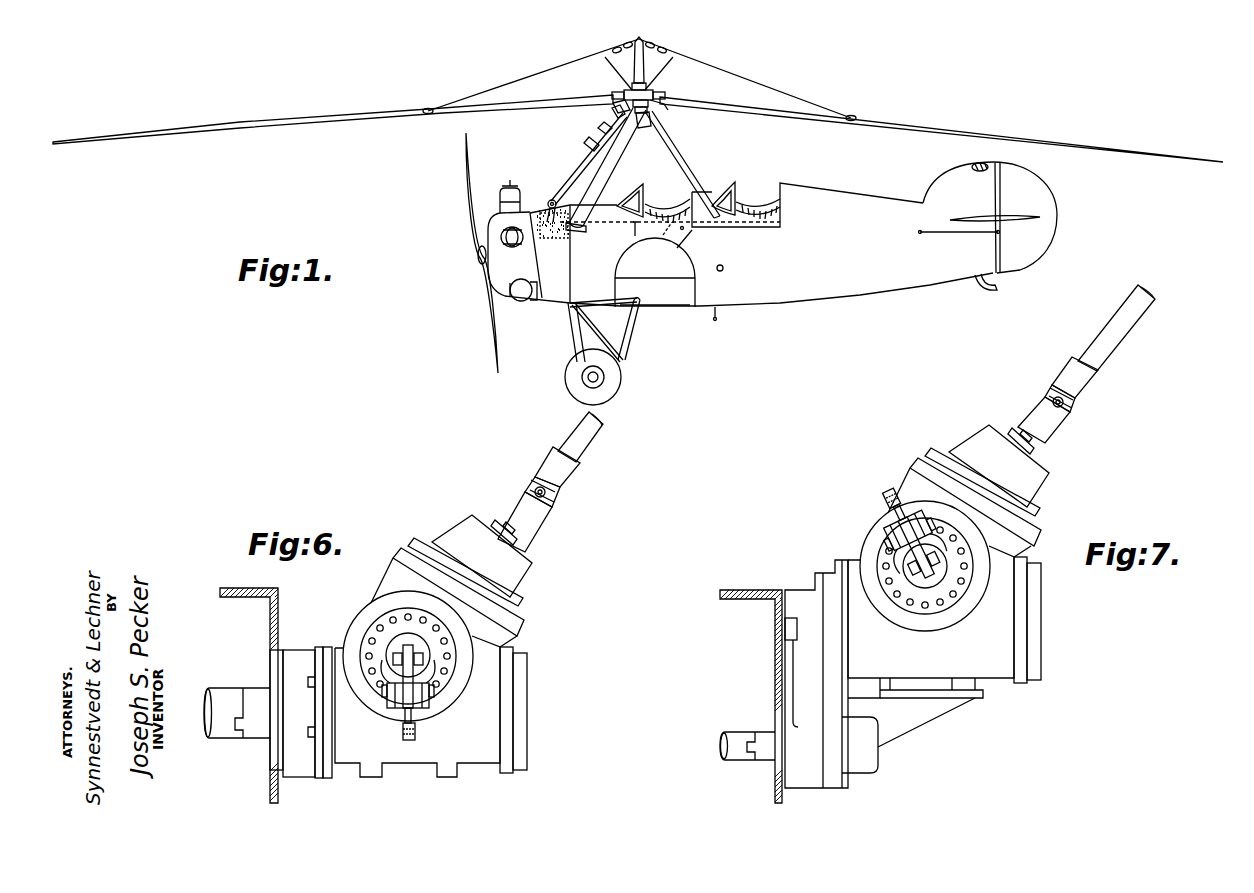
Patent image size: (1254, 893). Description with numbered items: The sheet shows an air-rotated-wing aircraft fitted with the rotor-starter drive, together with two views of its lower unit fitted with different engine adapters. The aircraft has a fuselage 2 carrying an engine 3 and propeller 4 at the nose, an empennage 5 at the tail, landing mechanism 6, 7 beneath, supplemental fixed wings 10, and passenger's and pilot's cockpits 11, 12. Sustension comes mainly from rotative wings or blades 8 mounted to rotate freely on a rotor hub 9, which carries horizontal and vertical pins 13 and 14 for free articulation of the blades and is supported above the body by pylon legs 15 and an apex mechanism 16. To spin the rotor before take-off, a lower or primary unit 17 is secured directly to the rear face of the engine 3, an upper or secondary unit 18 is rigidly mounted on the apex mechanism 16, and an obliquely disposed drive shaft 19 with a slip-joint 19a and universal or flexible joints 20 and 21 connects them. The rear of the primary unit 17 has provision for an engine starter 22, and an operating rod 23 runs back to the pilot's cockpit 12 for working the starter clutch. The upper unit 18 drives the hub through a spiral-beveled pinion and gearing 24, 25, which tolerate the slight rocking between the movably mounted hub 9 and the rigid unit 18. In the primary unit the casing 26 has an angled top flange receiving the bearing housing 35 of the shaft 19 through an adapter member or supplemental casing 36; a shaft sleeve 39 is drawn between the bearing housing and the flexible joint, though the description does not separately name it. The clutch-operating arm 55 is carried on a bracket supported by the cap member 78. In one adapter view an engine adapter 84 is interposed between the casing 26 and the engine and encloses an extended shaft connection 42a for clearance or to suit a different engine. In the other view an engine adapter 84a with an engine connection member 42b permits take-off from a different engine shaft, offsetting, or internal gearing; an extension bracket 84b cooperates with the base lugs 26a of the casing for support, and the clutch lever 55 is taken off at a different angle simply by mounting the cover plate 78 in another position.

In FIG. 1, the fuselage 2 is at (740, 252).
In FIG. 1, the engine 3 is at (510, 191).
In FIG. 1, the propeller 4 is at (470, 181).
In FIG. 1, the empennage 5 is at (993, 217).
In FIG. 1, the landing mechanism 6 is at (607, 352).
In FIG. 1, the landing mechanism 7 is at (981, 285).
In FIG. 1, the rotative wings or blades 8 is at (272, 120).
In FIG. 1, the rotor hub 9 is at (646, 96).
In FIG. 1, the supplemental fixed wings 10 is at (688, 297).
In FIG. 1, the passenger's cockpit 11 is at (653, 203).
In FIG. 1, the pilot's cockpit 12 is at (746, 200).
In FIG. 1, the horizontal pins 13 is at (632, 92).
In FIG. 1, the vertical pins 14 is at (620, 96).
In FIG. 1, the pylon legs 15 is at (616, 153).
In FIG. 1, the apex mechanism 16 is at (650, 116).
In FIG. 1, the lower or primary unit 17 is at (540, 236).
In FIG. 6, the lower or primary unit 17 is at (400, 656).
In FIG. 7, the lower or primary unit 17 is at (924, 565).
In FIG. 1, the upper or secondary unit 18 is at (613, 113).
In FIG. 1, the drive shaft 19 is at (578, 160).
In FIG. 6, the drive shaft 19 is at (580, 450).
In FIG. 7, the drive shaft 19 is at (1127, 330).
In FIG. 1, the slip-joint 19a is at (590, 143).
In FIG. 1, the universal or flexible joint 20 is at (551, 200).
In FIG. 6, the universal or flexible joint 20 is at (556, 496).
In FIG. 7, the universal or flexible joint 20 is at (1072, 408).
In FIG. 1, the universal or flexible joint 21 is at (600, 127).
In FIG. 1, the engine starter 22 is at (576, 234).
In FIG. 1, the operating rod 23 is at (664, 250).
In FIG. 1, the spiral-beveled pinion 24 is at (616, 105).
In FIG. 1, the spiral-beveled gearing 25 is at (668, 106).
In FIG. 6, the casing 26 is at (431, 667).
In FIG. 7, the casing 26 is at (944, 575).
In FIG. 7, the base lugs 26a is at (900, 680).
In FIG. 6, the bearing housing 35 is at (482, 556).
In FIG. 7, the bearing housing 35 is at (999, 466).
In FIG. 6, the adapter member or supplemental casing 36 is at (458, 587).
In FIG. 7, the adapter member or supplemental casing 36 is at (975, 497).
In FIG. 6, the rod sleeve 39 is at (533, 520).
In FIG. 7, the rod sleeve 39 is at (1050, 432).
In FIG. 6, the extended shaft connection 42a is at (258, 690).
In FIG. 7, the engine connection member 42b is at (762, 732).
In FIG. 6, the clutch-operating arm 55 is at (402, 722).
In FIG. 7, the clutch-operating arm 55 is at (898, 480).
In FIG. 6, the cap member 78 is at (444, 668).
In FIG. 7, the cap member 78 is at (958, 582).
In FIG. 6, the engine adapter 84 is at (301, 712).
In FIG. 7, the engine adapter 84a is at (816, 674).
In FIG. 7, the extension bracket 84b is at (910, 722).